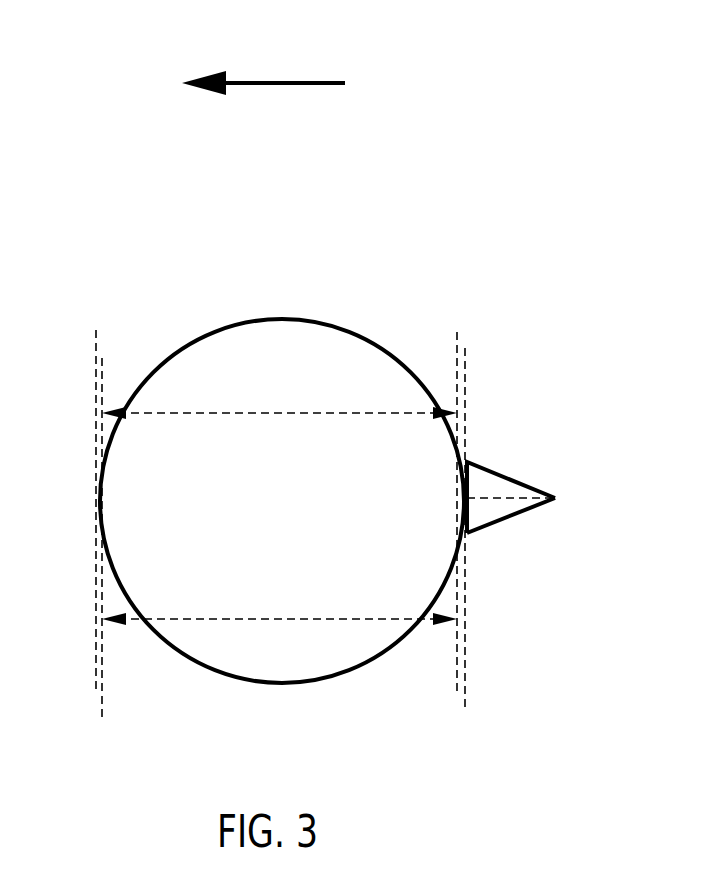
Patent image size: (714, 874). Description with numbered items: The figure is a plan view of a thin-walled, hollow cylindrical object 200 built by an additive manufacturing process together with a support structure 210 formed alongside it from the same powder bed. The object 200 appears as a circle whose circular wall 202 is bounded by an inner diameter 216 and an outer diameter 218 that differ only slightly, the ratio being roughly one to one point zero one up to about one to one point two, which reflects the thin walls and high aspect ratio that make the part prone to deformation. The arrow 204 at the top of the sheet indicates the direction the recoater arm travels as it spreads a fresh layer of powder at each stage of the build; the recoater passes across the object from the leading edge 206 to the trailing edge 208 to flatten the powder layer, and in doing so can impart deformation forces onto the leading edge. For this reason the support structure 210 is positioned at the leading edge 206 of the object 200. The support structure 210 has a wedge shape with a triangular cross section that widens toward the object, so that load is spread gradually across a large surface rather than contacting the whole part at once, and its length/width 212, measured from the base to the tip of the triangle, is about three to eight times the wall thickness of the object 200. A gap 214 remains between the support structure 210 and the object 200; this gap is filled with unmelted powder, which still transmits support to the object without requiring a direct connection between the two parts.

The object 200 is at (127, 292).
The circular body 202 is at (340, 372).
The arrow 204 is at (285, 81).
The leading edge 206 is at (467, 536).
The trailing edge 208 is at (100, 512).
The support structure 210 is at (524, 438).
The length/width of the support structure 212 is at (520, 496).
The gap 214 is at (462, 456).
The inner diameter 216 is at (207, 412).
The outer diameter 218 is at (250, 622).